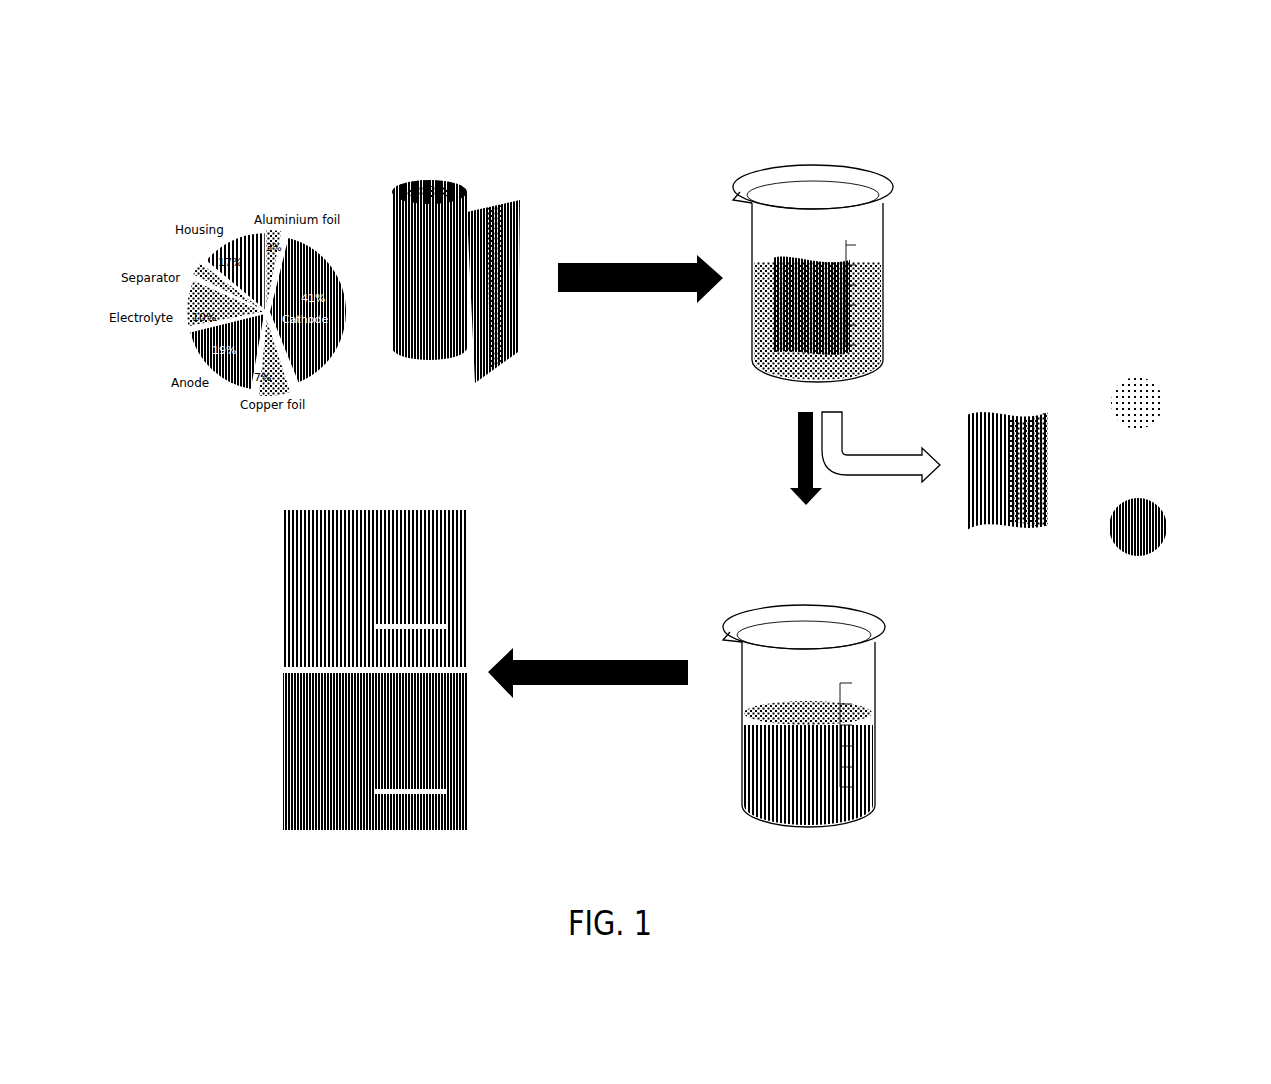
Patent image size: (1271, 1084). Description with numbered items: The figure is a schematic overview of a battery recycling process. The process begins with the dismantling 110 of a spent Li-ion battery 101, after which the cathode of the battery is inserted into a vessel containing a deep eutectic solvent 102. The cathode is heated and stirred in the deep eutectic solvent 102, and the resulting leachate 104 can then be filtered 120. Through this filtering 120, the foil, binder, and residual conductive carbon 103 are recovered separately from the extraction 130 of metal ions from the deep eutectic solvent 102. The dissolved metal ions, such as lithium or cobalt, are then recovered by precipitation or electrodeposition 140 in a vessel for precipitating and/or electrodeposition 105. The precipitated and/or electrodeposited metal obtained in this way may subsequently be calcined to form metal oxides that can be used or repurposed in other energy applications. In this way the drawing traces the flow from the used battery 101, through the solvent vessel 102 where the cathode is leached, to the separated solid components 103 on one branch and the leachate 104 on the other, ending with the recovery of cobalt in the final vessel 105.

The Li-ion battery 101 is at (456, 221).
The deep eutectic solvent 102 is at (813, 219).
The foil, binder, and residual conductive carbon 103 is at (1073, 422).
The leachate 104 is at (804, 743).
The vessel for precipitating and/or electrodeposition 105 is at (375, 687).
The dismantling 110 is at (640, 241).
The filtering 120 is at (881, 461).
The extraction 130 is at (773, 496).
The precipitation or electrodeposition 140 is at (588, 640).